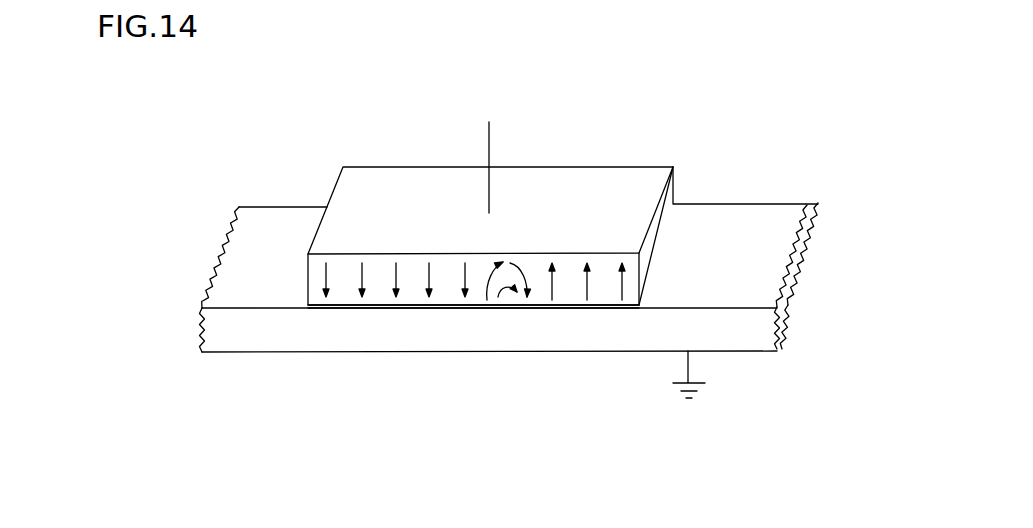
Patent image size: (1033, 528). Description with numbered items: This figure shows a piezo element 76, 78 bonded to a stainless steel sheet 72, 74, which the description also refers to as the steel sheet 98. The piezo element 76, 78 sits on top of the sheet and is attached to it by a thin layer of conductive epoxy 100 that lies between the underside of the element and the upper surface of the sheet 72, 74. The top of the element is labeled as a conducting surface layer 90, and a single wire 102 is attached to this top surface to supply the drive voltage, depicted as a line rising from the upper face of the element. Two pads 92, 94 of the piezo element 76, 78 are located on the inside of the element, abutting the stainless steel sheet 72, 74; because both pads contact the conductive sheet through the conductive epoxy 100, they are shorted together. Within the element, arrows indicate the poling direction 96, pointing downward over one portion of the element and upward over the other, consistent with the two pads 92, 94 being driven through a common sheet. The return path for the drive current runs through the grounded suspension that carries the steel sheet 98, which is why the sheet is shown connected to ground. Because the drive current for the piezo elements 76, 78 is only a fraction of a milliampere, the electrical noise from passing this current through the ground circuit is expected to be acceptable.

The stainless steel sheet 72 is at (509, 302).
The stainless steel sheet 74 is at (509, 302).
The piezo element 76 is at (487, 260).
The piezo element 78 is at (690, 98).
The conducting surface layer 90 is at (368, 183).
The pad 92 is at (662, 220).
The pad 94 is at (490, 308).
The poling direction 96 is at (318, 283).
The steel sheet 98 is at (509, 302).
The conductive epoxy 100 is at (400, 308).
The wire 102 is at (488, 122).